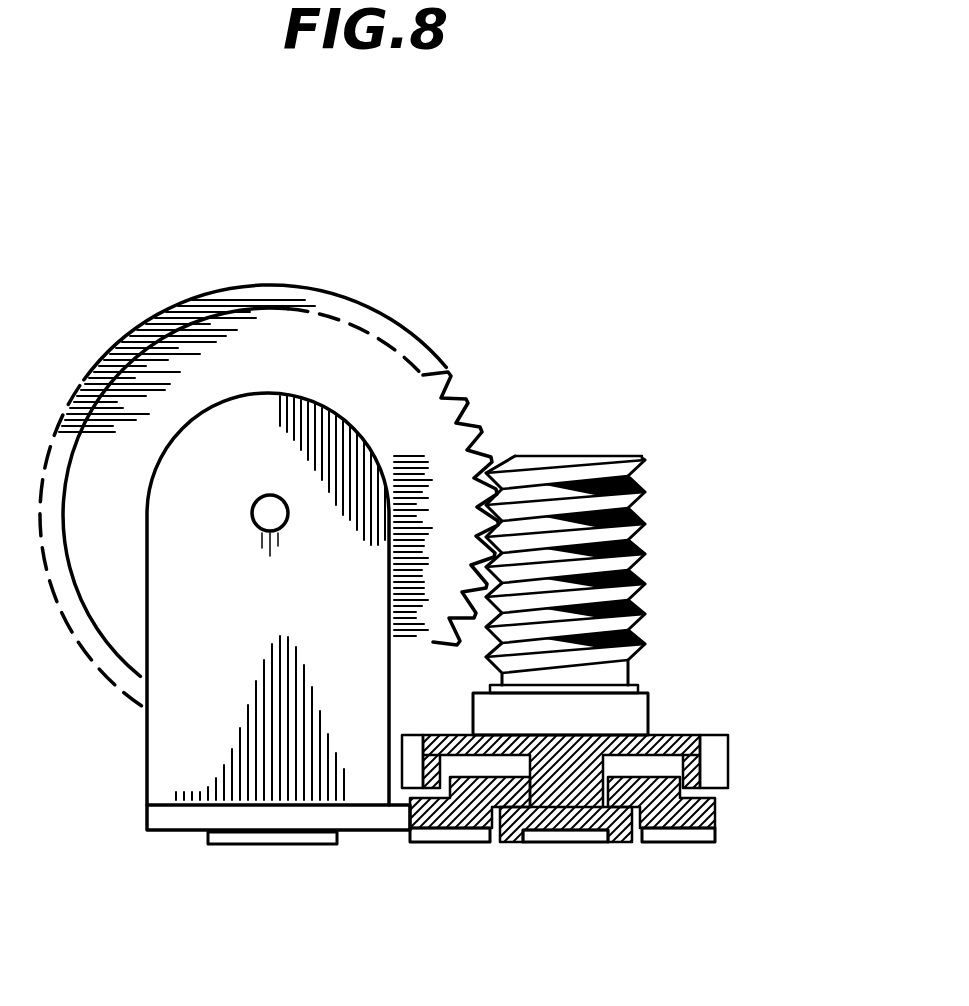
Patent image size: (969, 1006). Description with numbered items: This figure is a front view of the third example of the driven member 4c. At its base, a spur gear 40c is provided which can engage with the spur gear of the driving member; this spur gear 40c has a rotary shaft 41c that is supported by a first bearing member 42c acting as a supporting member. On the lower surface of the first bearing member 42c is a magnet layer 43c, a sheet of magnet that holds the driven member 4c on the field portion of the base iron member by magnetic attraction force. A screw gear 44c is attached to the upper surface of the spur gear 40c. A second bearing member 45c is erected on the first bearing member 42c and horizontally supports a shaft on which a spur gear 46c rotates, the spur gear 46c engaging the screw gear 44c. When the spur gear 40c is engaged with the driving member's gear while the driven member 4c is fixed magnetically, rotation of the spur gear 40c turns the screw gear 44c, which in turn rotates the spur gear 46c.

The driven member 4c is at (292, 176).
The spur gear 40c is at (678, 734).
The rotary shaft 41c is at (507, 845).
The first bearing member 42c is at (717, 815).
The magnet layer 43c is at (292, 845).
The screw gear 44c is at (633, 551).
The second bearing member 45c is at (382, 452).
The spur gear 46c is at (320, 316).